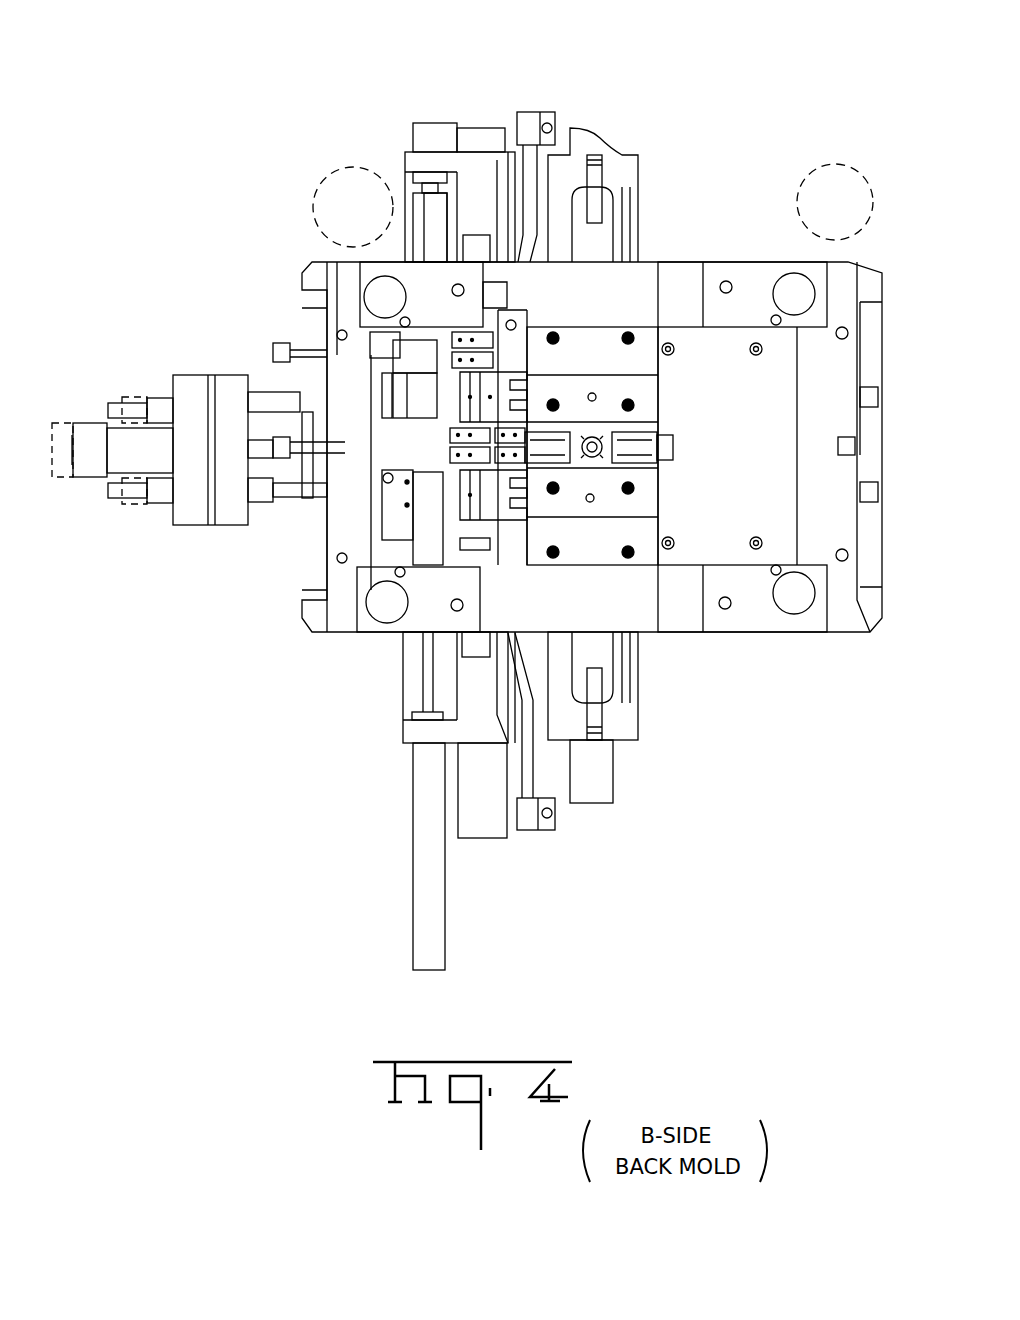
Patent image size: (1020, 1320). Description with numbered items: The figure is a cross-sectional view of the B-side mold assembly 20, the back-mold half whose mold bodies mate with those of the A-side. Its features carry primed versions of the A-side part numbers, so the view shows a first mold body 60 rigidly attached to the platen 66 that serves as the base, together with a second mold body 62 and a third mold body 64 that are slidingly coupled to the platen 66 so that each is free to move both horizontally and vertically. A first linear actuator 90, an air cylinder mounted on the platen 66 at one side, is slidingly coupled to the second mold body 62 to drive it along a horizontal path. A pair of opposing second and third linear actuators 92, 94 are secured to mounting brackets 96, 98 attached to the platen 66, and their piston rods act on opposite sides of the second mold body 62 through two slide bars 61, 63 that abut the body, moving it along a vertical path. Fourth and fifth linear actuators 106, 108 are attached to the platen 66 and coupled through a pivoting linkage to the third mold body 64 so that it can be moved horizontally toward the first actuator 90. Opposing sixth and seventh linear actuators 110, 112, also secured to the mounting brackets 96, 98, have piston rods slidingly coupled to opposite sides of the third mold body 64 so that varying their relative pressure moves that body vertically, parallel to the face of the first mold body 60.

The B-side mold assembly 20 is at (735, 122).
The first mold body 60 is at (650, 488).
The slide bar 61 is at (425, 508).
The second mold body 62 is at (440, 395).
The slide bar 63 is at (425, 228).
The third mold body 64 is at (510, 478).
The platen 66 is at (832, 372).
The first linear actuator 90 is at (143, 450).
The second linear actuator 92 is at (430, 940).
The third linear actuator 94 is at (443, 122).
The mounting bracket 96 is at (430, 735).
The mounting bracket 98 is at (400, 170).
The fourth linear actuator 106 is at (600, 805).
The fifth linear actuator 108 is at (595, 135).
The sixth linear actuator 110 is at (480, 835).
The seventh linear actuator 112 is at (483, 135).